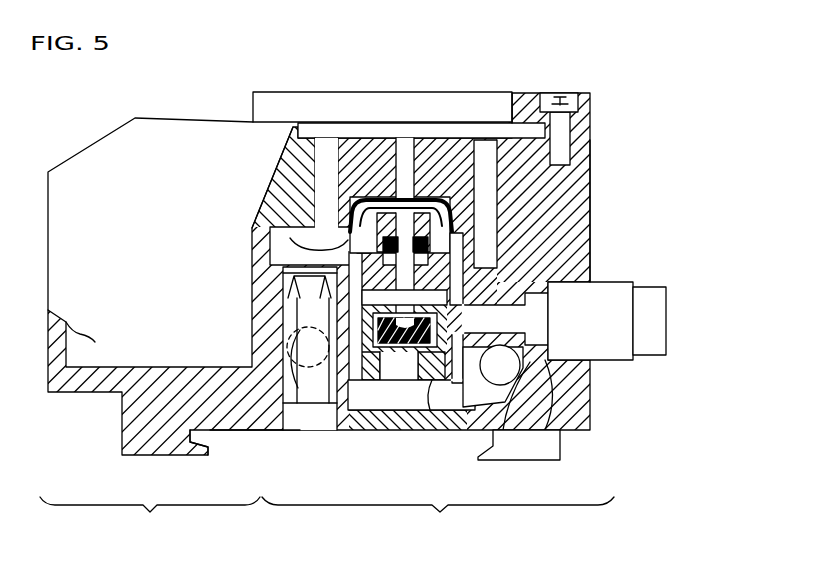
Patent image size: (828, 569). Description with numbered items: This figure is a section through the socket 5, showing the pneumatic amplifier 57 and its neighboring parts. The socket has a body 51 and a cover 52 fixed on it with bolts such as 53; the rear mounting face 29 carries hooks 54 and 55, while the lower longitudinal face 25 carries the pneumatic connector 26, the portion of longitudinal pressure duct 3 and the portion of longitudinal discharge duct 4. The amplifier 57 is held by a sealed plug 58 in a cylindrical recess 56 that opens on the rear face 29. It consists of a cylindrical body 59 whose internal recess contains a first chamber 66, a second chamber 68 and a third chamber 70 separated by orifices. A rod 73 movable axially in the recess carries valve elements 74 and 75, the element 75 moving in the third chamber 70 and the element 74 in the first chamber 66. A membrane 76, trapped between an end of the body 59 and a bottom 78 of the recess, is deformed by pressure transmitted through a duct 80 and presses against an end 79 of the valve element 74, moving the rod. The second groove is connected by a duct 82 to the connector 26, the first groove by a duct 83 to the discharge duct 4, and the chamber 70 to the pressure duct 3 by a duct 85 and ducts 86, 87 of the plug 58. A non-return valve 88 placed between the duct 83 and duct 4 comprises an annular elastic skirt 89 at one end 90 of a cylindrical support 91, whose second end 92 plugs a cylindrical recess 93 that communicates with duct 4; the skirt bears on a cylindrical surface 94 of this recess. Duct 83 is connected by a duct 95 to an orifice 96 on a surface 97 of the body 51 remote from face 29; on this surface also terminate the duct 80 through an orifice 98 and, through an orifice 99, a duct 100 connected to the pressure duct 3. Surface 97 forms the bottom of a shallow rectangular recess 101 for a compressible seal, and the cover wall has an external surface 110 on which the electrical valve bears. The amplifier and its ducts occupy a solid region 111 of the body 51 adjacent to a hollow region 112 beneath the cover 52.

The portion of longitudinal pressure duct 3 is at (510, 383).
The portion of longitudinal discharge duct 4 is at (300, 426).
The socket 5 is at (688, 50).
The lower longitudinal face 25 is at (597, 409).
The pneumatic connector 26 is at (657, 338).
The rear mounting face 29 is at (237, 440).
The body 51 is at (588, 143).
The cover 52 is at (570, 109).
The bolt 53 is at (590, 105).
The hook 54 is at (200, 449).
The hook 55 is at (485, 457).
The cylindrical recess 56 is at (352, 395).
The pneumatic amplifier 57 is at (697, 138).
The sealed plug 58 is at (412, 412).
The cylindrical body 59 is at (410, 278).
The first chamber 66 is at (395, 245).
The second chamber 68 is at (280, 262).
The third chamber 70 is at (400, 392).
The rod 73 is at (440, 250).
The valve element 74 is at (448, 233).
The valve element 75 is at (463, 305).
The membrane 76 is at (440, 196).
The bottom of the recess 78 is at (402, 197).
The end of the valve element 79 is at (445, 215).
The duct 80 is at (484, 177).
The duct 82 is at (540, 385).
The duct 83 is at (290, 238).
The duct 85 is at (505, 400).
The duct of the plug 86 is at (432, 405).
The duct of the plug 87 is at (457, 395).
The non-return valve 88 is at (165, 238).
The annular elastic skirt 89 is at (292, 285).
The end of the cylindrical support 90 is at (297, 300).
The cylindrical support 91 is at (295, 322).
The second end of the support 92 is at (292, 352).
The cylindrical recess 93 is at (312, 400).
The cylindrical surface 94 is at (290, 272).
The duct 95 is at (300, 150).
The orifice 96 is at (330, 170).
The surface 97 is at (354, 128).
The orifice 98 is at (418, 200).
The orifice 99 is at (485, 125).
The duct 100 is at (505, 140).
The rectangular recess 101 is at (440, 197).
The external surface 110 is at (267, 88).
The solid region 111 is at (458, 548).
The hollow region 112 is at (150, 331).